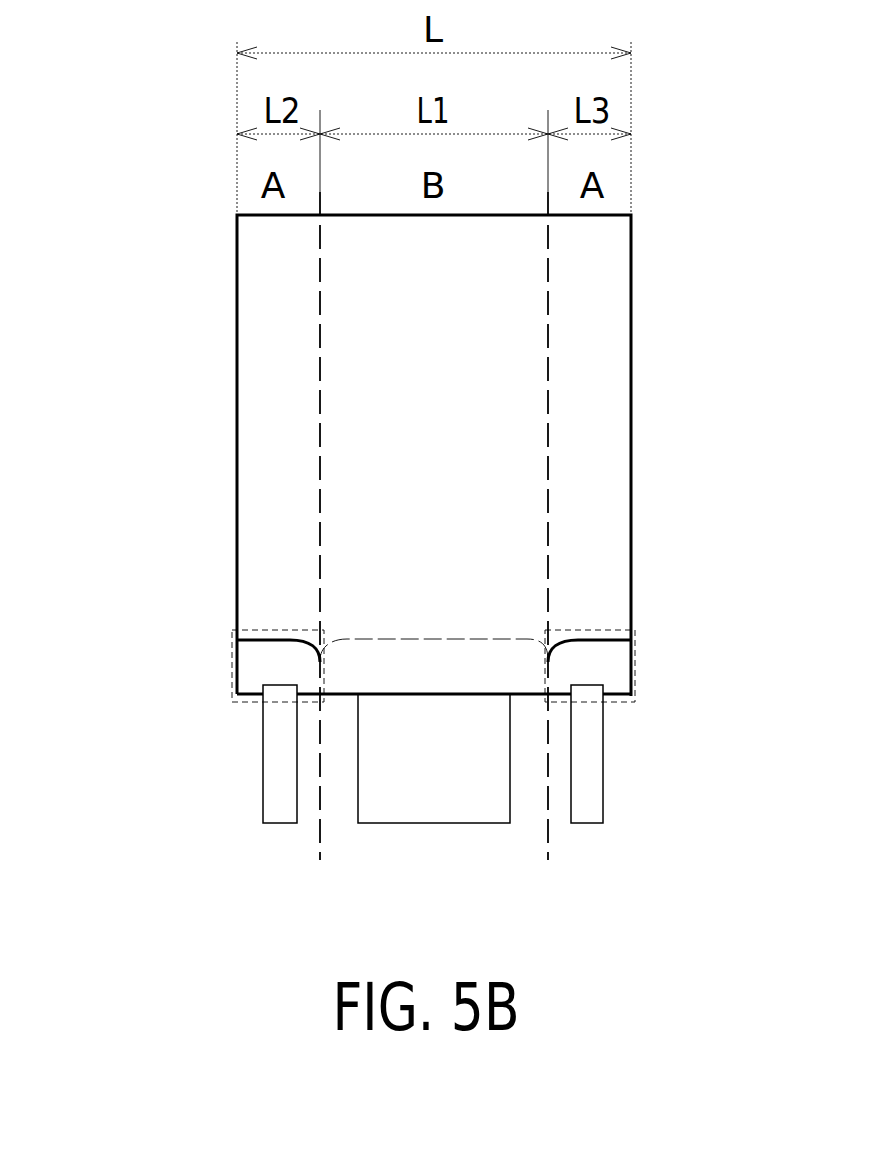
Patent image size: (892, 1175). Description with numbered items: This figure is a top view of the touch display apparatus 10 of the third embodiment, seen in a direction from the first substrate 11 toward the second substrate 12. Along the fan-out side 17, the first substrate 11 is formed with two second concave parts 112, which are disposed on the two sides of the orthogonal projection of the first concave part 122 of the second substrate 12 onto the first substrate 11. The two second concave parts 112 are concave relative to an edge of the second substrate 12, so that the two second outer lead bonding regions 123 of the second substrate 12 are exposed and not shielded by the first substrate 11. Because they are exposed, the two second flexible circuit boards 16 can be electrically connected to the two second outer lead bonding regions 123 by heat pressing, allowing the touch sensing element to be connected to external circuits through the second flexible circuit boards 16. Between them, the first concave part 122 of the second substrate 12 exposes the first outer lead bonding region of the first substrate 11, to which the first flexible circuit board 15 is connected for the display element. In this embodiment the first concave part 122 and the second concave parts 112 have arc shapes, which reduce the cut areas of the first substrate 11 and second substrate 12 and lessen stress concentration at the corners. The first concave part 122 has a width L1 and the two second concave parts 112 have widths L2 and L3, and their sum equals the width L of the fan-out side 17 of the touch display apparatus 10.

The touch display apparatus 10 is at (737, 908).
The first substrate 11 is at (605, 310).
The second substrate 12 is at (236, 668).
The second concave part 112 is at (267, 660).
The first concave part 122 is at (346, 639).
The second outer lead bonding region 123 is at (233, 641).
The first flexible circuit board 15 is at (447, 802).
The second flexible circuit board 16 is at (280, 802).
The fan-out side 17 is at (635, 718).